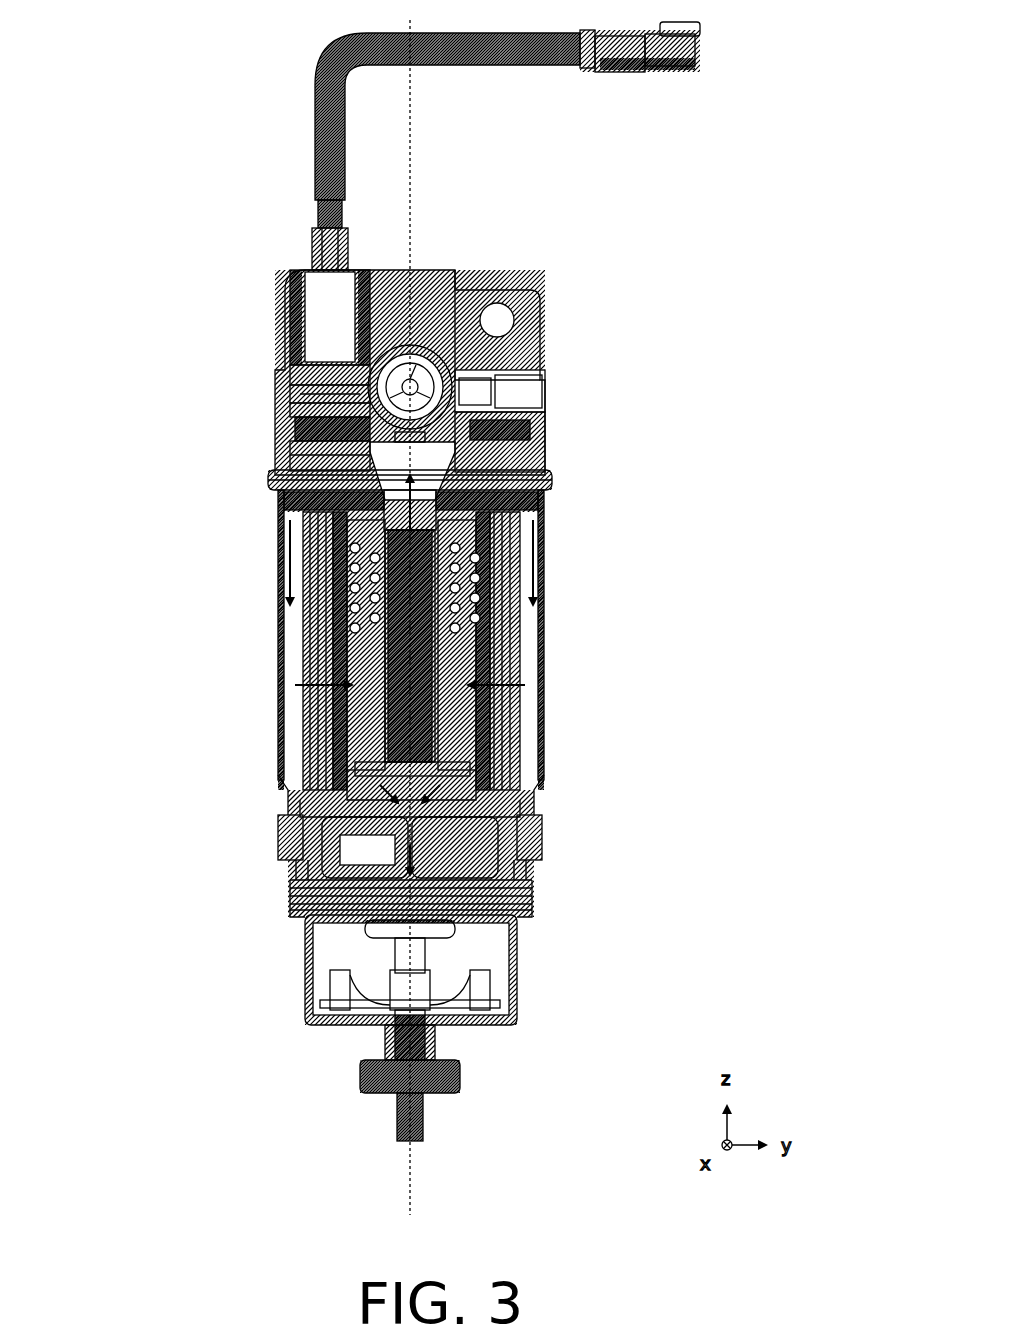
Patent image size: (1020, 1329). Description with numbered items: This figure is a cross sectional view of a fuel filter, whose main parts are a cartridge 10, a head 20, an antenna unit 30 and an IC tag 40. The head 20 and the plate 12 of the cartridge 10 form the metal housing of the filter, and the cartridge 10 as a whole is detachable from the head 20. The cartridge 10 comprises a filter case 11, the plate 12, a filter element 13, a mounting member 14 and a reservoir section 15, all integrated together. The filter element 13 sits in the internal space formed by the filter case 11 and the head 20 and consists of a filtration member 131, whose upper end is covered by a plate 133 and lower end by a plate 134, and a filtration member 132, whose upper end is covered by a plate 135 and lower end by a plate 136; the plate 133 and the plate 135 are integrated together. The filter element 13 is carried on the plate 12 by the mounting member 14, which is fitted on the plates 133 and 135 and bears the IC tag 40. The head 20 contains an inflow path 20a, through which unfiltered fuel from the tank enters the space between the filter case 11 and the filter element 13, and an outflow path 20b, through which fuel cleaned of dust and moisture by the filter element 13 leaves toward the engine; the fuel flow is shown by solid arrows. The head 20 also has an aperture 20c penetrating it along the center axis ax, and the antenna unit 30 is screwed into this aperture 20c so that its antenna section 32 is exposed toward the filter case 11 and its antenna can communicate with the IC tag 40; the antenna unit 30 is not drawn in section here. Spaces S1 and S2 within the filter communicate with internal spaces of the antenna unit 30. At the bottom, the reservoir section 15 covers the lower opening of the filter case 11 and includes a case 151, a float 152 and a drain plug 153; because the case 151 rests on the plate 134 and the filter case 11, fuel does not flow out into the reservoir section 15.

The cartridge 10 is at (688, 510).
The filter case 11 is at (547, 585).
The plate 12 is at (548, 472).
The filter element 13 is at (492, 695).
The mounting member 14 is at (545, 525).
The reservoir section 15 is at (495, 1015).
The head 20 is at (430, 300).
The inflow path 20a is at (278, 455).
The outflow path 20b is at (275, 400).
The aperture 20c is at (290, 385).
The antenna unit 30 is at (290, 275).
The antenna section 32 is at (270, 425).
The IC tag 40 is at (278, 494).
The filtration member 131 is at (485, 700).
The filtration member 132 is at (470, 740).
The plate 133 is at (515, 620).
The plate 134 is at (505, 810).
The plate 135 is at (500, 655).
The plate 136 is at (460, 775).
The case 151 is at (517, 950).
The float 152 is at (520, 920).
The drain plug 153 is at (462, 1056).
The space S1 is at (280, 612).
The space S2 is at (545, 405).
The center axis ax is at (413, 120).